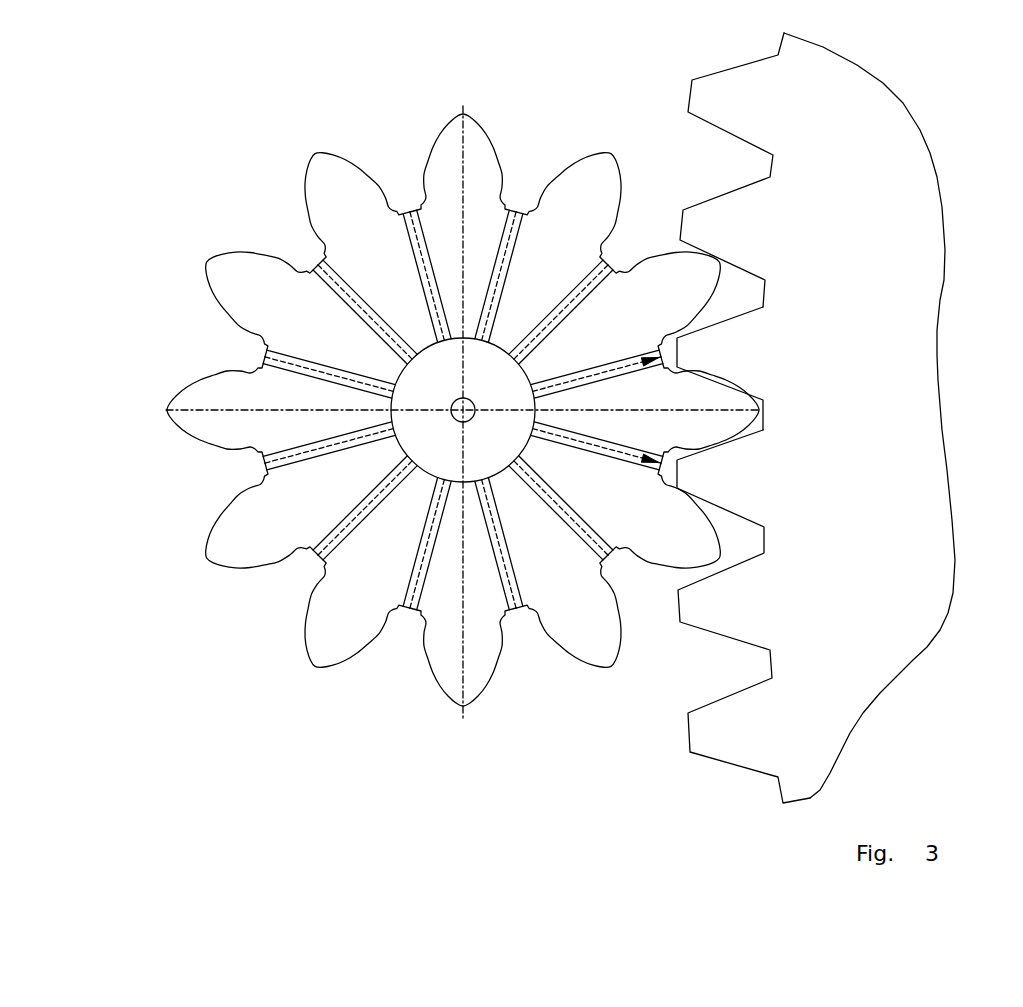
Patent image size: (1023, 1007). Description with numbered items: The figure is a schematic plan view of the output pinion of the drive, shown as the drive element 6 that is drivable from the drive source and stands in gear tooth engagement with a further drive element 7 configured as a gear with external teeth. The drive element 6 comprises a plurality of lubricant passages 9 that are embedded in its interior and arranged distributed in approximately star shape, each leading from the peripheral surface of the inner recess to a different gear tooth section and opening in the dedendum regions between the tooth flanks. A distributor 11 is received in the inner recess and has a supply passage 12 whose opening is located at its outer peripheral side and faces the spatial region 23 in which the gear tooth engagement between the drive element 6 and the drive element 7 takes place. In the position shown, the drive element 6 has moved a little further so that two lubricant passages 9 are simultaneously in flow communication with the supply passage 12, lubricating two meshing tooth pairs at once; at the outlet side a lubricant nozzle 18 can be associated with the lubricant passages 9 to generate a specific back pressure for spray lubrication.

The drive element 6 is at (328, 200).
The lubricant passages 9 is at (585, 377).
The distributor 11 is at (433, 463).
The supply passage 12 is at (492, 404).
The lubricant nozzle 18 is at (424, 592).
The spatial region 23 is at (765, 358).
The drive element 7 is at (830, 418).